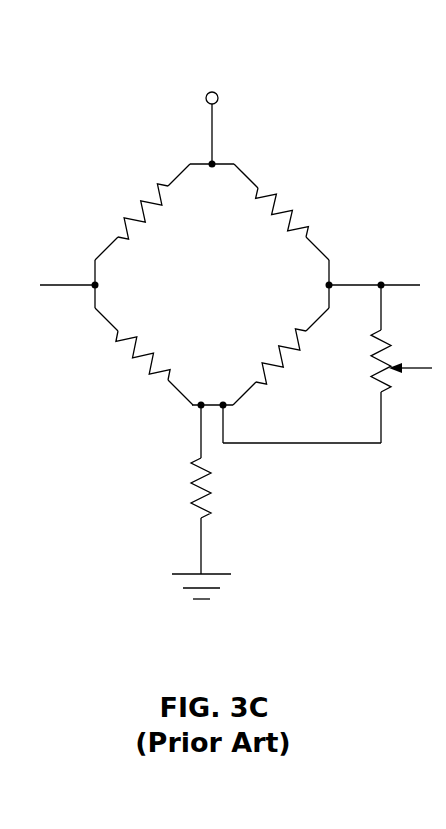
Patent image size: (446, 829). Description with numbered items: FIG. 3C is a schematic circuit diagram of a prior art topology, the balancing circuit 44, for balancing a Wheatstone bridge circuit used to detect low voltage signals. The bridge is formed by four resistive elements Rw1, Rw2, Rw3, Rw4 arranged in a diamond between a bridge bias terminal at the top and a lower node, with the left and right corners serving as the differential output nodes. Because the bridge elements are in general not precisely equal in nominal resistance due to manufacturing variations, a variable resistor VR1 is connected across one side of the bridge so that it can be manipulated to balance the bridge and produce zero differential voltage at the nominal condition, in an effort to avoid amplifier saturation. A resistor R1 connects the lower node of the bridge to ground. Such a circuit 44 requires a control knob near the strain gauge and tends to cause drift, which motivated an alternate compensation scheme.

The balancing circuit 44 is at (310, 53).
The bridge resistor Rw1 is at (137, 212).
The bridge resistor Rw2 is at (288, 212).
The bridge resistor Rw3 is at (137, 356).
The bridge resistor Rw4 is at (275, 356).
The variable resistor VR1 is at (327, 364).
The resistor R1 is at (209, 502).